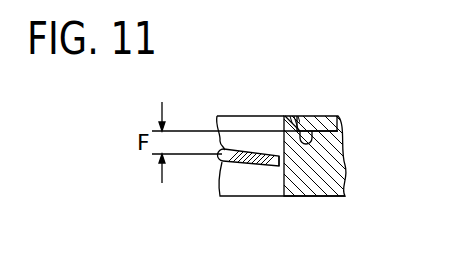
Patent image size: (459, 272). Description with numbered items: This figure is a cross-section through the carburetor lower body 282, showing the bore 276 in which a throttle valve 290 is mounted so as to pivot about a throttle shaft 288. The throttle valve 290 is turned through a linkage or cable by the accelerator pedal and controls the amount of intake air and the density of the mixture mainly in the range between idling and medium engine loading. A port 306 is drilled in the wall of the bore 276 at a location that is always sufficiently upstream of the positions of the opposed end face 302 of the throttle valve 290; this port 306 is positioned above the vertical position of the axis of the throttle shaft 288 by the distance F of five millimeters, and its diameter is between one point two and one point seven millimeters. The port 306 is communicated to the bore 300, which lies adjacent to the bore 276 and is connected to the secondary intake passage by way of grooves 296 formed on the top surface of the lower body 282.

The bore 276 is at (278, 164).
The lower body 282 is at (318, 197).
The throttle shaft 288 is at (227, 138).
The throttle valve 290 is at (255, 148).
The grooves 296 is at (330, 118).
The bore 300 is at (340, 143).
The end face 302 is at (276, 168).
The port 306 is at (293, 117).